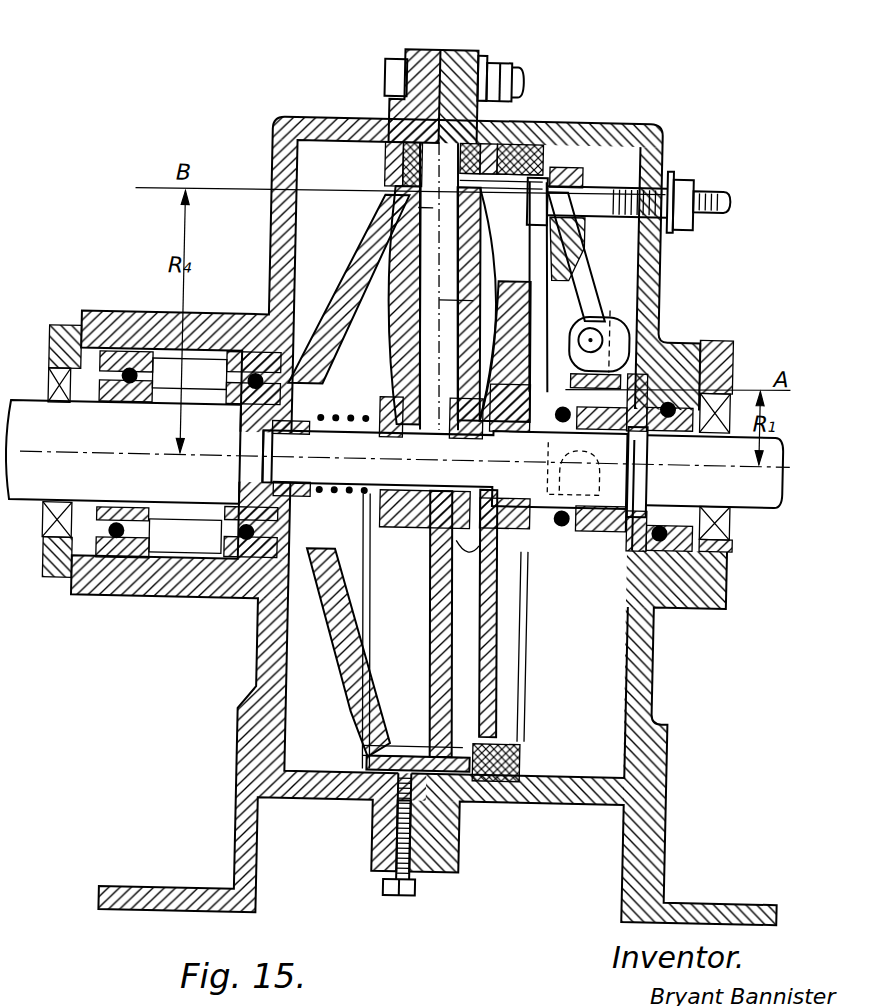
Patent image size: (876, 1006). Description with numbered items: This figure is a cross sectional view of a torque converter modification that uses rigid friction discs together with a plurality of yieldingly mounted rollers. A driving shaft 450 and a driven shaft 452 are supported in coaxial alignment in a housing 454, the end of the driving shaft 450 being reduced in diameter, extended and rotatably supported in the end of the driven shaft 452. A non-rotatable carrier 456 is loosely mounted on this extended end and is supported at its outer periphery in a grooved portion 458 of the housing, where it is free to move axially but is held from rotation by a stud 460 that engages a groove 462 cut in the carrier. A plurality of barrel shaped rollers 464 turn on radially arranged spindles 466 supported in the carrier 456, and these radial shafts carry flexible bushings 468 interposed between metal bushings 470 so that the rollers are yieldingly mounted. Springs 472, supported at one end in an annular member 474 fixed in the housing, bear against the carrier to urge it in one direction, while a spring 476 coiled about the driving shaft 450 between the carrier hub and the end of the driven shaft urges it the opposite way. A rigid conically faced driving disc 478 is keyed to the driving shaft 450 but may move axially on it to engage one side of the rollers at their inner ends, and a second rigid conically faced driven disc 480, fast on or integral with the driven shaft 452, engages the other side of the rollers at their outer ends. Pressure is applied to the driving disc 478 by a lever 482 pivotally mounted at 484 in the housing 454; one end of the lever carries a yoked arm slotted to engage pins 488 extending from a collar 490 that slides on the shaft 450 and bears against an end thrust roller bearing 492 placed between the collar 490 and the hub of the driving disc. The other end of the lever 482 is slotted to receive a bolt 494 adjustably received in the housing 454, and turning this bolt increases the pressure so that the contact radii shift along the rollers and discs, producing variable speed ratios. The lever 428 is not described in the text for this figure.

The lever 428 is at (557, 287).
The driving shaft 450 is at (748, 497).
The driven shaft 452 is at (142, 453).
The housing 454 is at (265, 122).
The carrier 456 is at (386, 141).
The grooved portion 458 is at (356, 142).
The stud 460 is at (394, 885).
The groove 462 is at (484, 797).
The barrel shaped rollers 464 is at (389, 355).
The spindles 466 is at (422, 210).
The flexible bushings 468 is at (493, 120).
The metal bushings 470 is at (459, 52).
The springs 472 is at (532, 151).
The annular member 474 is at (526, 741).
The spring 476 is at (354, 495).
The driving disc 478 is at (503, 641).
The driven disc 480 is at (348, 289).
The lever 482 is at (517, 301).
The pivot 484 is at (600, 334).
The pins 488 is at (629, 484).
The collar 490 is at (547, 546).
The end thrust roller bearing 492 is at (557, 548).
The bolt 494 is at (611, 184).